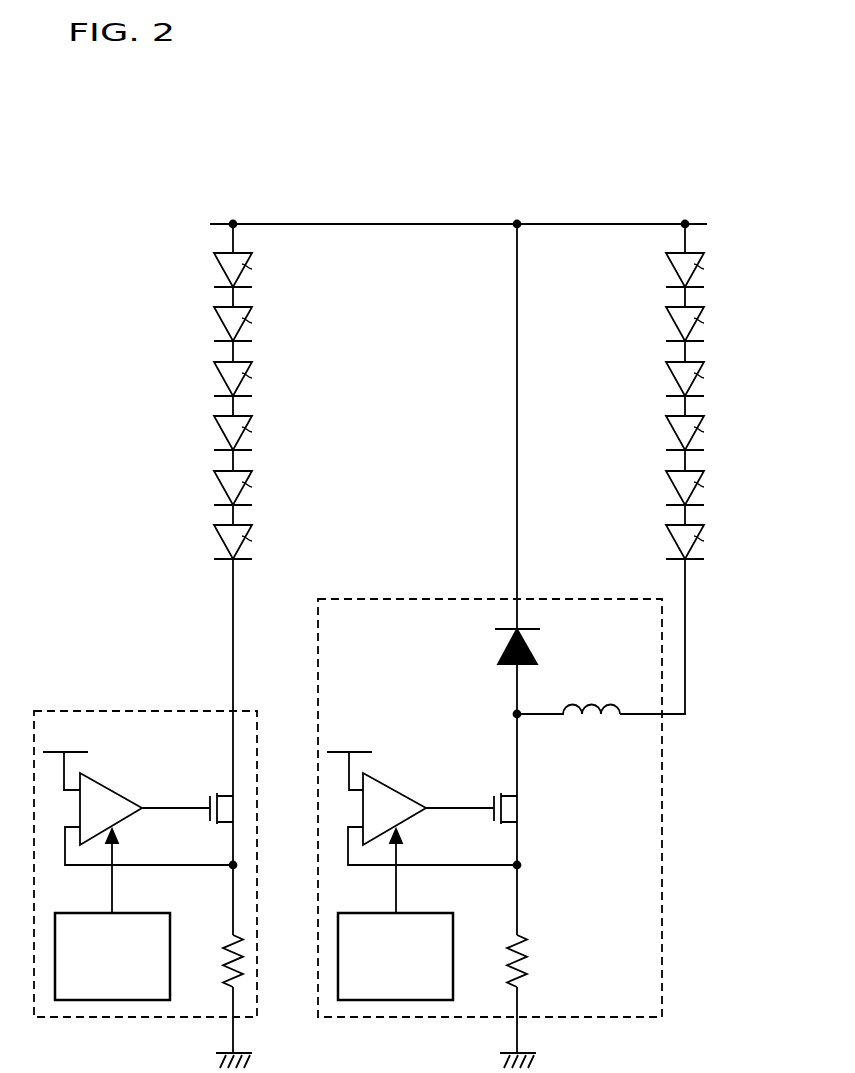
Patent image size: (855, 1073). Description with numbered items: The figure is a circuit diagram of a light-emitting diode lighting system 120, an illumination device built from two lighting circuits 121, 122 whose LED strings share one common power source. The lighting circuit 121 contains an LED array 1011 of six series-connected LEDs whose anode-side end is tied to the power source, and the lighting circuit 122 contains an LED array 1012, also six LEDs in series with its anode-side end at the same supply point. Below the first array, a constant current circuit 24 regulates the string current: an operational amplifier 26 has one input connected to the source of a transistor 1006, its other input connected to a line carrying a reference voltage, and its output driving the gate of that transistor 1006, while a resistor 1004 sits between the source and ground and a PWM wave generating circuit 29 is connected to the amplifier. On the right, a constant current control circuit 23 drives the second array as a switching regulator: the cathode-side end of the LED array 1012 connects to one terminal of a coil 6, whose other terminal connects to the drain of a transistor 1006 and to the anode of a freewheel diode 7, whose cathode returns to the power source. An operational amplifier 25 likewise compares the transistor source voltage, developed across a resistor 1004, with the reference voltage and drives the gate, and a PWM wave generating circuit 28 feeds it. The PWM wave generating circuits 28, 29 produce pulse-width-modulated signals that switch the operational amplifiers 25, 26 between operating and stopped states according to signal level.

The light-emitting diode lighting system 120 is at (421, 155).
The lighting circuit 121 is at (178, 311).
The lighting circuit 122 is at (462, 311).
The LED array 1011 is at (304, 248).
The LED array 1012 is at (659, 248).
The constant current control circuit 23 is at (429, 598).
The constant current circuit 24 is at (144, 709).
The operational amplifier 25 is at (388, 785).
The operational amplifier 26 is at (104, 785).
The PWM wave generating circuit 28 is at (424, 913).
The PWM wave generating circuit 29 is at (140, 913).
The diode 7 is at (535, 645).
The coil 6 is at (593, 697).
The transistor 1006 is at (221, 824).
The resistor 1004 is at (229, 942).